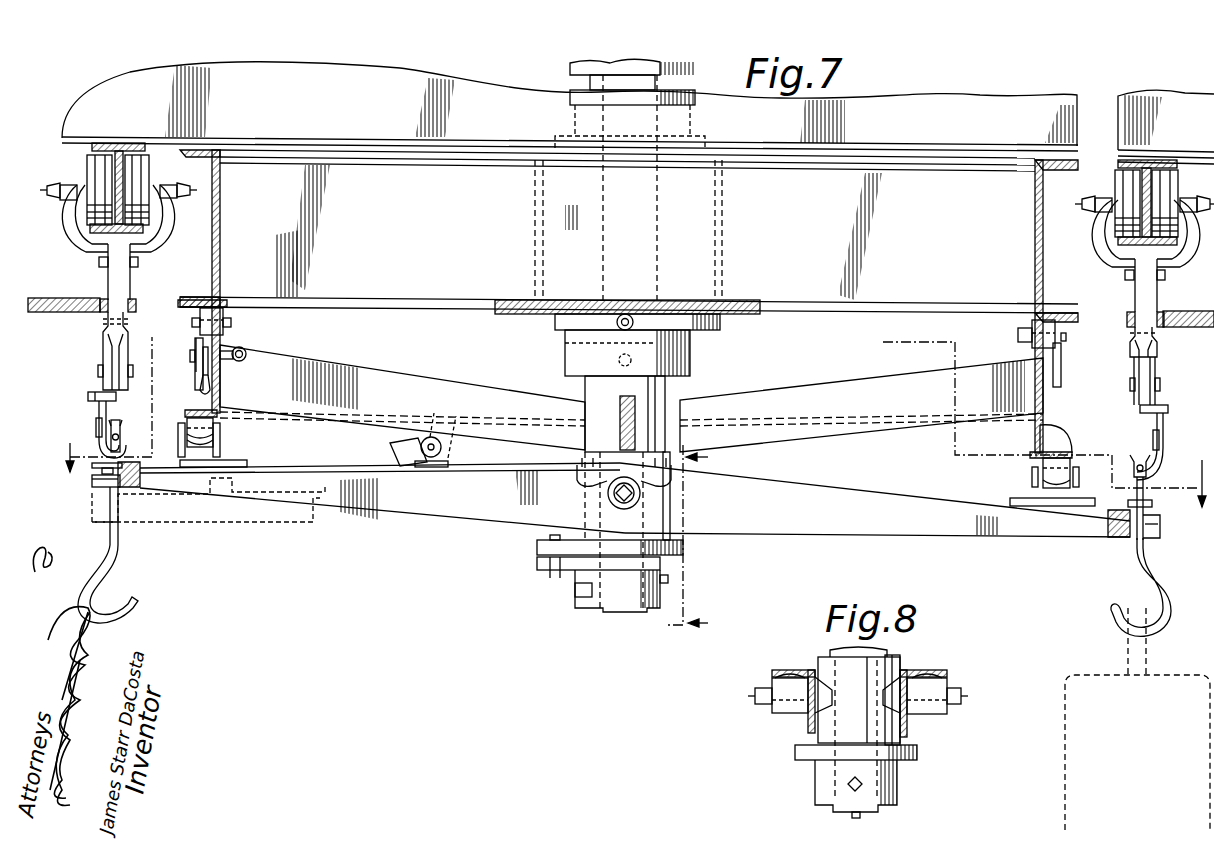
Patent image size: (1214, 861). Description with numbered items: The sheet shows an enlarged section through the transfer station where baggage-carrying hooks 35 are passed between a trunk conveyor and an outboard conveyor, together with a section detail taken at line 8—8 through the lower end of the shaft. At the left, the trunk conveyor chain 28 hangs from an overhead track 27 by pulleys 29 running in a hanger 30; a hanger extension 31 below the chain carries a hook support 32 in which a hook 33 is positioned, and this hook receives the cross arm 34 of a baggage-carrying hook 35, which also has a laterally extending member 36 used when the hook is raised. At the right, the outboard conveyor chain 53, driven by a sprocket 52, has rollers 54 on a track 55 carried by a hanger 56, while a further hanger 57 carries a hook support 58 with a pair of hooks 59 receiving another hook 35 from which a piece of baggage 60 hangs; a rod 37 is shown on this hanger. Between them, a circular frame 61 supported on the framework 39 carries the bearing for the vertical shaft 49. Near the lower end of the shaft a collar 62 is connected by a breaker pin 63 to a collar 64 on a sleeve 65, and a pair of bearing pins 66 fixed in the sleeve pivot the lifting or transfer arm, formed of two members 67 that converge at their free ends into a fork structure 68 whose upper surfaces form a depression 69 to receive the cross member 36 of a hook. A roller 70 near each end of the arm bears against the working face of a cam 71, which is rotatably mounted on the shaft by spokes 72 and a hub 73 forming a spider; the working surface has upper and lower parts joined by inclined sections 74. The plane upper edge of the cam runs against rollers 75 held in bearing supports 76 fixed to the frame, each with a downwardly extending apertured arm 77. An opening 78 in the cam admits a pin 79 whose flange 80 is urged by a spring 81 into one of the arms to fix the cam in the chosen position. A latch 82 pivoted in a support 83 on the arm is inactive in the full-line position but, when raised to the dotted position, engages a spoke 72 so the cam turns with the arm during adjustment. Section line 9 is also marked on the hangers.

In FIG. 7, the track 27 is at (120, 147).
In FIG. 7, the chain 28 is at (132, 305).
In FIG. 7, the pulley 29 is at (87, 165).
In FIG. 7, the hanger 30 is at (77, 254).
In FIG. 7, the hanger extension 31 is at (103, 341).
In FIG. 7, the hook support 32 is at (92, 395).
In FIG. 7, the hook 33 is at (97, 416).
In FIG. 7, the cross arm 34 is at (118, 442).
In FIG. 7, the baggage-carrying hook 35 is at (103, 560).
In FIG. 7, the laterally extending member 36 is at (95, 466).
In FIG. 7, the hook rod 37 is at (1147, 472).
In FIG. 7, the framework 39 is at (468, 87).
In FIG. 7, the shaft 49 is at (572, 64).
In FIG. 8, the shaft 49 is at (830, 655).
In FIG. 7, the sprocket 52 is at (1158, 342).
In FIG. 7, the outboard conveyor chain 53 is at (1128, 320).
In FIG. 7, the roller 54 is at (1115, 178).
In FIG. 7, the track 55 is at (1150, 162).
In FIG. 7, the hanger 56 is at (1170, 273).
In FIG. 7, the hanger 57 is at (1158, 370).
In FIG. 7, the hook support 58 is at (1166, 406).
In FIG. 7, the hook 59 is at (1166, 422).
In FIG. 7, the piece of baggage 60 is at (1166, 672).
In FIG. 7, the circular frame 61 is at (222, 246).
In FIG. 7, the collar 62 is at (580, 593).
In FIG. 8, the collar 62 is at (820, 790).
In FIG. 7, the breaker pin 63 is at (540, 563).
In FIG. 7, the collar 64 is at (537, 547).
In FIG. 8, the collar 64 is at (797, 752).
In FIG. 7, the sleeve 65 is at (680, 535).
In FIG. 8, the sleeve 65 is at (896, 662).
In FIG. 7, the bearing pin 66 is at (610, 494).
In FIG. 8, the bearing pin 66 is at (762, 703).
In FIG. 7, the transfer arm member 67 is at (262, 523).
In FIG. 8, the transfer arm member 67 is at (942, 672).
In FIG. 7, the fork structure 68 is at (1175, 528).
In FIG. 7, the depression 69 is at (128, 463).
In FIG. 7, the roller 70 is at (214, 440).
In FIG. 7, the cam 71 is at (196, 412).
In FIG. 7, the spoke 72 is at (440, 393).
In FIG. 7, the hub 73 is at (665, 413).
In FIG. 7, the inclined section 74 is at (1056, 447).
In FIG. 7, the roller 75 is at (212, 299).
In FIG. 7, the bearing support 76 is at (200, 319).
In FIG. 7, the apertured arm 77 is at (195, 352).
In FIG. 7, the opening 78 is at (237, 361).
In FIG. 7, the pin 79 is at (196, 363).
In FIG. 7, the flange 80 is at (198, 378).
In FIG. 7, the spring 81 is at (197, 385).
In FIG. 7, the latch 82 is at (393, 452).
In FIG. 7, the support 83 is at (432, 462).
In FIG. 7, the section line 8— 8 is at (697, 541).
In FIG. 7, the section line 9- 9 is at (623, 422).